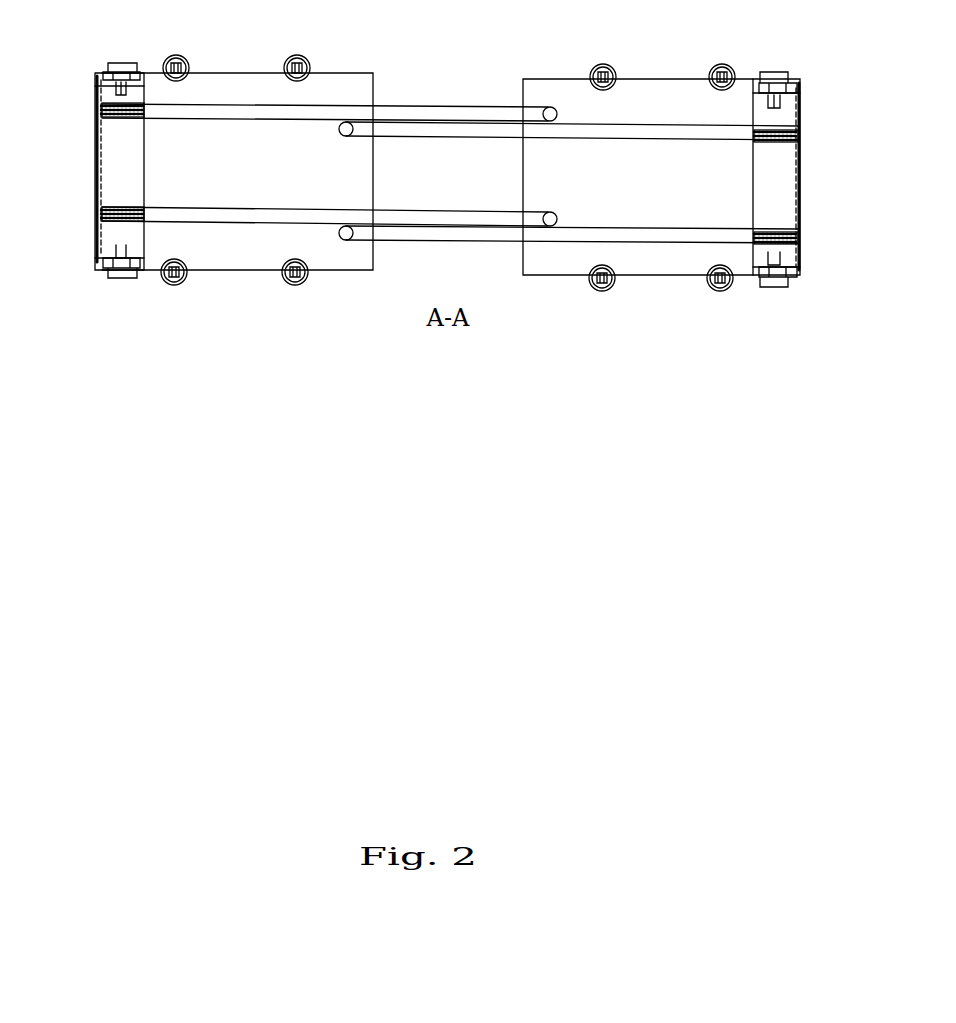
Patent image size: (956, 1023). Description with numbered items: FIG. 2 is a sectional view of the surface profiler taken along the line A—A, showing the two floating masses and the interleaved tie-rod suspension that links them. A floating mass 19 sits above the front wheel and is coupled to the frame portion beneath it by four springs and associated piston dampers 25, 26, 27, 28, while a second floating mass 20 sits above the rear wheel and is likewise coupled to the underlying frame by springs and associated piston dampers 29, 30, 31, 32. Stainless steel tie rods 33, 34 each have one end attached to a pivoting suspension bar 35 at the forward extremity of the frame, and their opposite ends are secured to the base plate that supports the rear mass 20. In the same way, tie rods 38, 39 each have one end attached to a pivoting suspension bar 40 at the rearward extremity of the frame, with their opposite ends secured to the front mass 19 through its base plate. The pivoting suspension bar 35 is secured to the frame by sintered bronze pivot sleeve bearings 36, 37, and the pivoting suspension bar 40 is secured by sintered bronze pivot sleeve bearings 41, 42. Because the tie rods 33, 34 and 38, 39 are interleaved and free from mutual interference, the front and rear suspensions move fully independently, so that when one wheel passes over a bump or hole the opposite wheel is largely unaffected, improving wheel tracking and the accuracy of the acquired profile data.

The floating mass 19 is at (717, 198).
The floating mass 20 is at (172, 173).
The spring and associated piston damper 25 is at (723, 64).
The spring and associated piston damper 26 is at (603, 64).
The spring and associated piston damper 27 is at (720, 291).
The spring and associated piston damper 28 is at (602, 291).
The spring and associated piston damper 29 is at (297, 55).
The spring and associated piston damper 30 is at (177, 55).
The spring and associated piston damper 31 is at (296, 286).
The spring and associated piston damper 32 is at (175, 286).
The stainless steel tie rod 33 is at (800, 137).
The stainless steel tie rod 34 is at (800, 240).
The pivoting suspension bar 35 is at (787, 118).
The sintered bronze pivot sleeve bearing 36 is at (793, 80).
The sintered bronze pivot sleeve bearing 37 is at (788, 277).
The tie rod 38 is at (103, 109).
The tie rod 39 is at (103, 212).
The pivoting suspension bar 40 is at (107, 90).
The sintered bronze pivot sleeve bearing 41 is at (108, 70).
The sintered bronze pivot sleeve bearing 42 is at (107, 268).